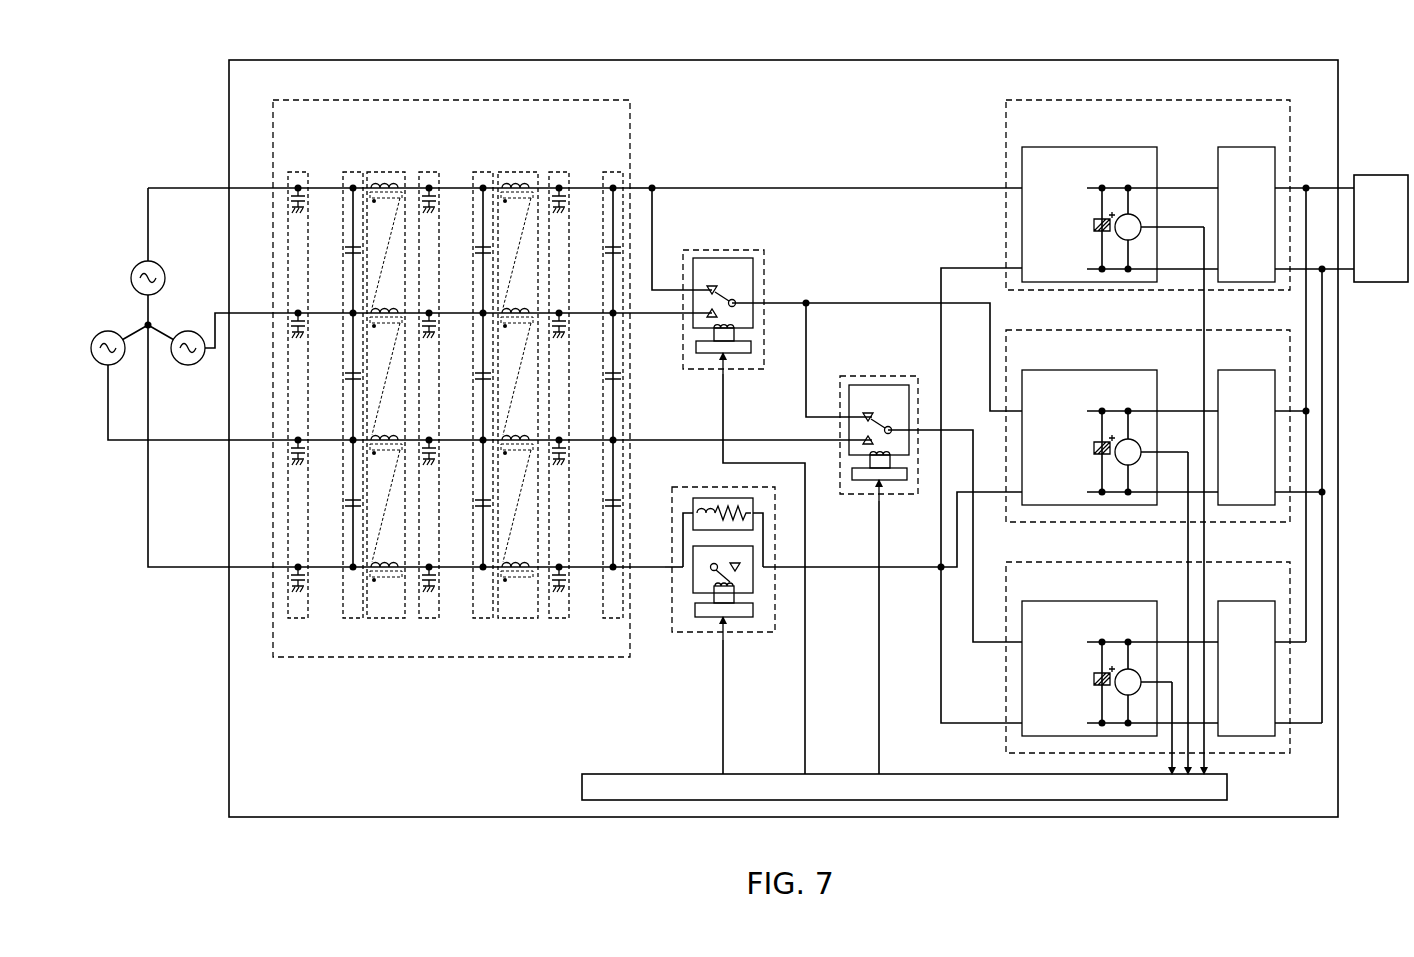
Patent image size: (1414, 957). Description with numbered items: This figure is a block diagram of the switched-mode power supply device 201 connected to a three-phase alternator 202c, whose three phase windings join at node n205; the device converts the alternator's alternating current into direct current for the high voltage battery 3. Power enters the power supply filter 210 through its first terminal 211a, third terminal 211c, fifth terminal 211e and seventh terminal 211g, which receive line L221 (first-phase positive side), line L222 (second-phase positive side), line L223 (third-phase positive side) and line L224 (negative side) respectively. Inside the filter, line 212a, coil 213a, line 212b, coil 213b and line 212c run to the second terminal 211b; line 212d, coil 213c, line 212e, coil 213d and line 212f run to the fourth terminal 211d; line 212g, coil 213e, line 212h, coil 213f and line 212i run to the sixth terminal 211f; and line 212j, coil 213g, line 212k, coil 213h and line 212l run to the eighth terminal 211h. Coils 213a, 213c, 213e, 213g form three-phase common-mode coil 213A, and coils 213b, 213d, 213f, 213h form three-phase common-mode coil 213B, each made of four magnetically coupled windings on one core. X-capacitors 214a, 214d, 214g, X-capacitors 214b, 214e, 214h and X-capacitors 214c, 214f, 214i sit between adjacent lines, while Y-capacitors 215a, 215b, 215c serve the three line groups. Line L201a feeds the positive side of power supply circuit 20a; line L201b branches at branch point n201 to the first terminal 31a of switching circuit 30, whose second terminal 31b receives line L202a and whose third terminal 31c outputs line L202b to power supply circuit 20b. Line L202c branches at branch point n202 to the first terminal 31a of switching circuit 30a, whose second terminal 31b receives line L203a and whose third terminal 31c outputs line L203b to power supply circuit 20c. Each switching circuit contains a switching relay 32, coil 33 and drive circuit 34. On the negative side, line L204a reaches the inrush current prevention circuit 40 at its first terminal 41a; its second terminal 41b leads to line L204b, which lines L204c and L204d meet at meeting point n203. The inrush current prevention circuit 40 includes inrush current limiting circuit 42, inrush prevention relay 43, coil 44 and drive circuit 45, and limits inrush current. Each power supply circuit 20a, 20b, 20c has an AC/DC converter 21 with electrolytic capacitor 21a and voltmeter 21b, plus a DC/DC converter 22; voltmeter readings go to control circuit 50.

The switched-mode power supply device 201 is at (765, 60).
The power supply filter 210 is at (430, 100).
The three-phase alternator 202c is at (186, 272).
The neutral node n205 is at (140, 325).
The line L221 is at (208, 187).
The line L222 is at (213, 348).
The line L223 is at (198, 442).
The line L224 is at (198, 568).
The first terminal 211a is at (272, 187).
The second terminal 211b is at (632, 187).
The third terminal 211c is at (272, 312).
The fourth terminal 211d is at (632, 312).
The fifth terminal 211e is at (272, 439).
The sixth terminal 211f is at (632, 441).
The seventh terminal 211g is at (272, 569).
The eighth terminal 211h is at (632, 569).
The line 212a is at (300, 186).
The line 212b is at (431, 186).
The line 212c is at (561, 186).
The line 212d is at (300, 312).
The line 212e is at (431, 312).
The line 212f is at (561, 312).
The line 212g is at (300, 439).
The line 212h is at (431, 439).
The line 212i is at (561, 439).
The line 212j is at (300, 565).
The line 212k is at (431, 565).
The line 212l is at (561, 565).
The coil 213a is at (384, 186).
The coil 213b is at (515, 186).
The coil 213c is at (384, 311).
The coil 213d is at (515, 311).
The coil 213e is at (384, 438).
The coil 213f is at (515, 438).
The coil 213g is at (384, 565).
The coil 213h is at (515, 565).
The three-phase common-mode coil 213A is at (378, 620).
The three-phase common-mode coil 213B is at (508, 620).
The X-capacitor 214a is at (346, 250).
The X-capacitor 214b is at (476, 250).
The X-capacitor 214c is at (606, 250).
The X-capacitor 214d is at (346, 375).
The X-capacitor 214e is at (476, 375).
The X-capacitor 214f is at (606, 375).
The X-capacitor 214g is at (346, 501).
The X-capacitor 214h is at (476, 501).
The X-capacitor 214i is at (606, 501).
The Y-capacitor 215a is at (300, 620).
The Y-capacitor 215b is at (430, 620).
The Y-capacitor 215c is at (561, 620).
The branch point n201 is at (654, 192).
The branch point n202 is at (810, 306).
The meeting point n203 is at (938, 572).
The line L201a is at (834, 187).
The line L201b is at (654, 238).
The line L202a is at (640, 317).
The line L202b is at (790, 302).
The line L202c is at (804, 392).
The line L203a is at (656, 438).
The line L203b is at (990, 644).
The line L204a is at (636, 561).
The line L204b is at (832, 565).
The line L204c is at (981, 496).
The line L204d is at (990, 724).
The switching circuit 30 is at (722, 250).
The switching circuit 30a is at (860, 376).
The first terminal 31a is at (705, 289).
The second terminal 31b is at (705, 317).
The third terminal 31c is at (740, 300).
The switching relay 32 is at (725, 296).
The coil 33 is at (736, 326).
The drive circuit 34 is at (752, 347).
The inrush current prevention circuit 40 is at (730, 632).
The first terminal 41a is at (682, 565).
The second terminal 41b is at (764, 565).
The inrush current limiting circuit 42 is at (712, 498).
The inrush prevention relay 43 is at (694, 588).
The coil 44 is at (750, 618).
The drive circuit 45 is at (714, 609).
The control circuit 50 is at (1228, 786).
The power supply circuit 20a is at (1138, 100).
The power supply circuit 20b is at (1138, 330).
The power supply circuit 20c is at (1138, 562).
The AC/DC converter 21 is at (1090, 147).
The electrolytic capacitor 21a is at (1096, 231).
The voltmeter 21b is at (1124, 214).
The DC/DC converter 22 is at (1243, 147).
The high voltage battery 3 is at (1378, 175).